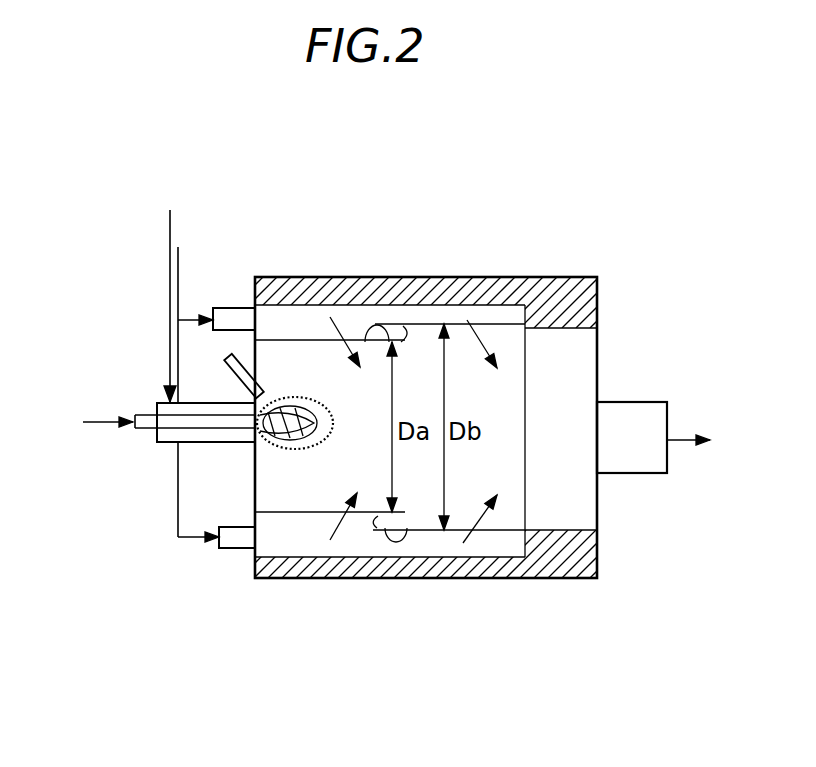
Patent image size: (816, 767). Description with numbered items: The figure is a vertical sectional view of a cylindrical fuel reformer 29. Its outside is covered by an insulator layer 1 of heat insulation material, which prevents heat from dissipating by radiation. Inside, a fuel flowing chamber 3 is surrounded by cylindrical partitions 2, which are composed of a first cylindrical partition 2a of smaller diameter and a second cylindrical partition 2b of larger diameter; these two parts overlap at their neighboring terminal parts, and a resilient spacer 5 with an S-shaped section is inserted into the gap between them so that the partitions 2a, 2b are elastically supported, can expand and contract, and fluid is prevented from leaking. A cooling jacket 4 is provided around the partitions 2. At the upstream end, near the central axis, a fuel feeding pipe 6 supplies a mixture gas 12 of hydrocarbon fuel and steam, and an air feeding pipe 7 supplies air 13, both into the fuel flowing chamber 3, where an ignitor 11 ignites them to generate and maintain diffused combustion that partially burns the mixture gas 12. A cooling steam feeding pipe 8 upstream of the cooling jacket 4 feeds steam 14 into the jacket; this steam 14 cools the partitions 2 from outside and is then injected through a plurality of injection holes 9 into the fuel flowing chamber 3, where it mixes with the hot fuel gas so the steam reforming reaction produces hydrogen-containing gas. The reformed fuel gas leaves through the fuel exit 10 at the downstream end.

The insulator layer 1 is at (575, 292).
The cylindrical partitions 2 is at (462, 665).
The first cylindrical partition 2a is at (512, 530).
The second cylindrical partition 2b is at (303, 513).
The fuel flowing chamber 3 is at (512, 337).
The cooling jacket 4 is at (310, 323).
The spacer 5 is at (373, 522).
The fuel feeding pipe 6 is at (140, 429).
The air feeding pipe 7 is at (172, 441).
The cooling steam feeding pipe 8 is at (212, 549).
The injection holes 9 is at (470, 320).
The fuel exit 10 is at (612, 402).
The ignitor 11 is at (232, 352).
The mixture gas 12 is at (107, 422).
The air 13 is at (170, 247).
The steam 14 is at (190, 318).
The fuel reformer 29 is at (420, 277).